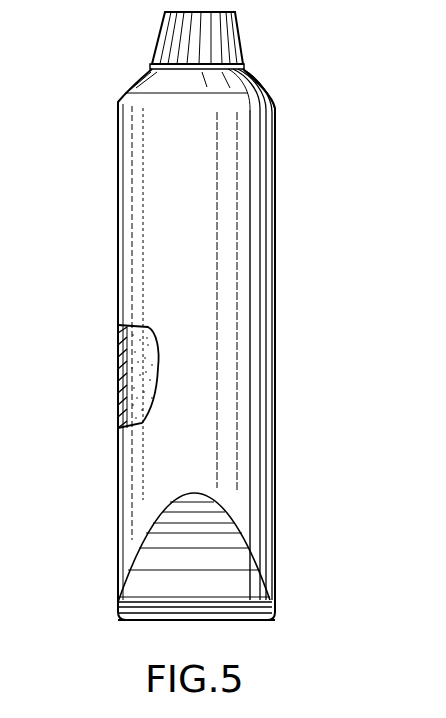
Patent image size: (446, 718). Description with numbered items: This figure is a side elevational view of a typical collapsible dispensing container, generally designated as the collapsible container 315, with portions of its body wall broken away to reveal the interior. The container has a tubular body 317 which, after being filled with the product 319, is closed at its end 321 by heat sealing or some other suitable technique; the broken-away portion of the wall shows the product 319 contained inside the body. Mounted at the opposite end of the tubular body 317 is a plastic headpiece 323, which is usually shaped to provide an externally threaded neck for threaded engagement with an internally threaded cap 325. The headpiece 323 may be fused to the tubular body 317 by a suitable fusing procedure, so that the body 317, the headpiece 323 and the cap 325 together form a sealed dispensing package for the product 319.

The collapsible container 315 is at (275, 255).
The tubular body 317 is at (256, 398).
The product 319 is at (138, 362).
The end 321 is at (252, 623).
The plastic headpiece 323 is at (252, 87).
The cap 325 is at (164, 40).